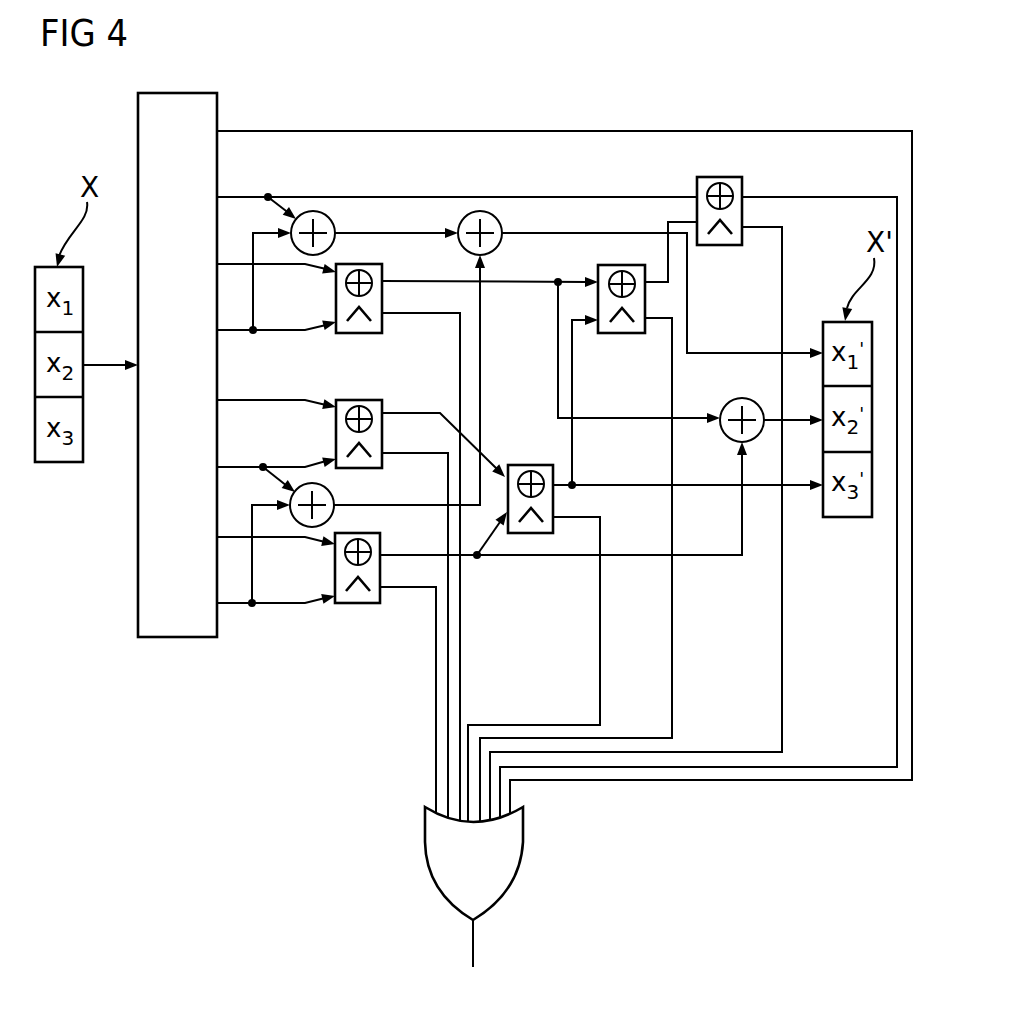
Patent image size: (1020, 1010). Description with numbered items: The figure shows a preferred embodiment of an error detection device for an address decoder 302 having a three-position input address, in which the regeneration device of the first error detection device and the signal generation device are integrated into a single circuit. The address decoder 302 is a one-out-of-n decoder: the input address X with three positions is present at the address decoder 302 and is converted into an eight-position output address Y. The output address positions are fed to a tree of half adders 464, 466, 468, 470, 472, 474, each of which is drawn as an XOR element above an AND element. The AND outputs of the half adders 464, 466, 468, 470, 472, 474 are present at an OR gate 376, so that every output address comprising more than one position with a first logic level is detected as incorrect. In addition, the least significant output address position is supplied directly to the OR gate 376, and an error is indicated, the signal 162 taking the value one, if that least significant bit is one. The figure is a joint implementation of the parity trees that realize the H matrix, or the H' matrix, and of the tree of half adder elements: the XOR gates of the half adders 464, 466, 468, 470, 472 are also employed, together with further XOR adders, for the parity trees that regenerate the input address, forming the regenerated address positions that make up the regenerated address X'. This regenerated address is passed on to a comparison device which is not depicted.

The address decoder 302 is at (193, 93).
The half adder 464 is at (358, 334).
The half adder 466 is at (374, 400).
The half adder 468 is at (358, 604).
The half adder 470 is at (622, 334).
The half adder 472 is at (537, 465).
The half adder 474 is at (744, 178).
The OR gate 376 is at (523, 848).
The signal 162 is at (474, 945).